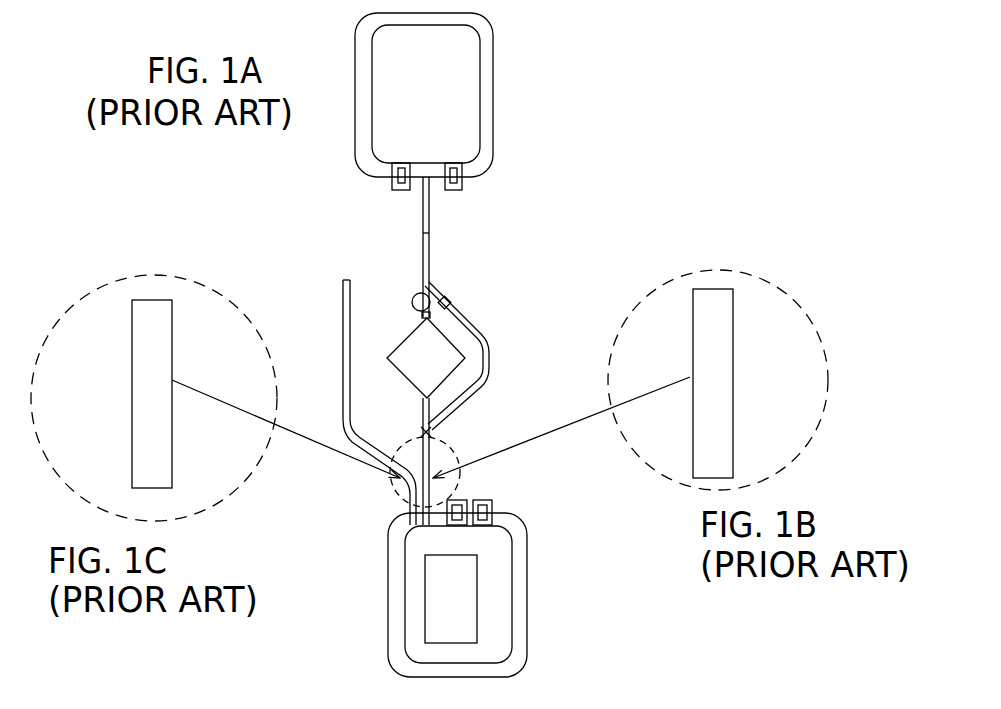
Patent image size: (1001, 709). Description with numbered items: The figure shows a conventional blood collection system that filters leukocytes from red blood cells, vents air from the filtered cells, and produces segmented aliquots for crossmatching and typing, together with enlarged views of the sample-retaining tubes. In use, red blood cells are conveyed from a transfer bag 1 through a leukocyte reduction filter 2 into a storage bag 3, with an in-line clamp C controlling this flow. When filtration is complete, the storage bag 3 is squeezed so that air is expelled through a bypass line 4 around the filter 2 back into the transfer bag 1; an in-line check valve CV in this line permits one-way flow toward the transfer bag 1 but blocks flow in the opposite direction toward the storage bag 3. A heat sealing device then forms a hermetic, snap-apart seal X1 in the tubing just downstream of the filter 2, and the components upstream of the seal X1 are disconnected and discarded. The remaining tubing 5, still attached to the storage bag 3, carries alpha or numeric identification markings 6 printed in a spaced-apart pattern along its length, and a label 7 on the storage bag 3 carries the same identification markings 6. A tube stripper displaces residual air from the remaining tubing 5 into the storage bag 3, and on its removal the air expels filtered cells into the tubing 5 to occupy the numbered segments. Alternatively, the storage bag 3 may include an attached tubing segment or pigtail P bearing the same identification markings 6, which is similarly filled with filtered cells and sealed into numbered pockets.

In FIG. 1A, the transfer bag 1 is at (473, 93).
In FIG. 1A, the leukocyte reduction filter 2 is at (437, 365).
In FIG. 1A, the storage bag 3 is at (483, 595).
In FIG. 1A, the bypass line 4 is at (487, 363).
In FIG. 1A, the remaining tubing 5 is at (430, 467).
In FIG. 1B, the remaining tubing 5 is at (733, 358).
In FIG. 1C, the identification markings 6 is at (167, 402).
In FIG. 1B, the identification markings 6 is at (728, 390).
In FIG. 1A, the label 7 is at (437, 626).
In FIG. 1A, the in-line clamp C is at (410, 290).
In FIG. 1A, the in-line check valve CV is at (452, 298).
In FIG. 1A, the snap-apart seal X1 is at (430, 430).
In FIG. 1A, the pigtail P is at (343, 302).
In FIG. 1C, the pigtail P is at (173, 367).